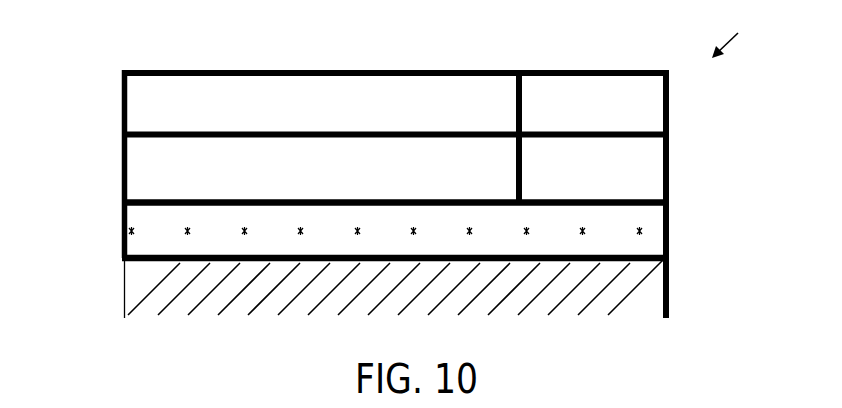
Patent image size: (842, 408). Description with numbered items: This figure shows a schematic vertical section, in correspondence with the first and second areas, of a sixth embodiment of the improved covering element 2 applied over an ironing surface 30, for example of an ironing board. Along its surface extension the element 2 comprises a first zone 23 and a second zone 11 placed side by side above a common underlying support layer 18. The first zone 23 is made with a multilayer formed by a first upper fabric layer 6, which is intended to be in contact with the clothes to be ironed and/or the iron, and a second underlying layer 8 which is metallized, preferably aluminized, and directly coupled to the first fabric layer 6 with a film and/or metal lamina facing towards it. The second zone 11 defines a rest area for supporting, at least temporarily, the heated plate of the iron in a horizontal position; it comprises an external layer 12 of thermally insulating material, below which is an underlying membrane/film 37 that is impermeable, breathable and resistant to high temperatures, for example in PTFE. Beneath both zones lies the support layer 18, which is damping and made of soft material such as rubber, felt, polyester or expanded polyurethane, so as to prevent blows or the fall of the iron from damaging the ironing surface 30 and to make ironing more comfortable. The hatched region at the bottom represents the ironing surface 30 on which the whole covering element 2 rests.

The improved covering element 2 is at (733, 37).
The first fabric layer 6 is at (159, 100).
The second metallized layer 8 is at (163, 172).
The second zone 11 is at (577, 69).
The layer of thermally insulating material 12 is at (647, 104).
The underlying support layer 18 is at (652, 229).
The first zone 23 is at (230, 69).
The ironing surface 30 is at (143, 286).
The underlying membrane/film 37 is at (650, 172).